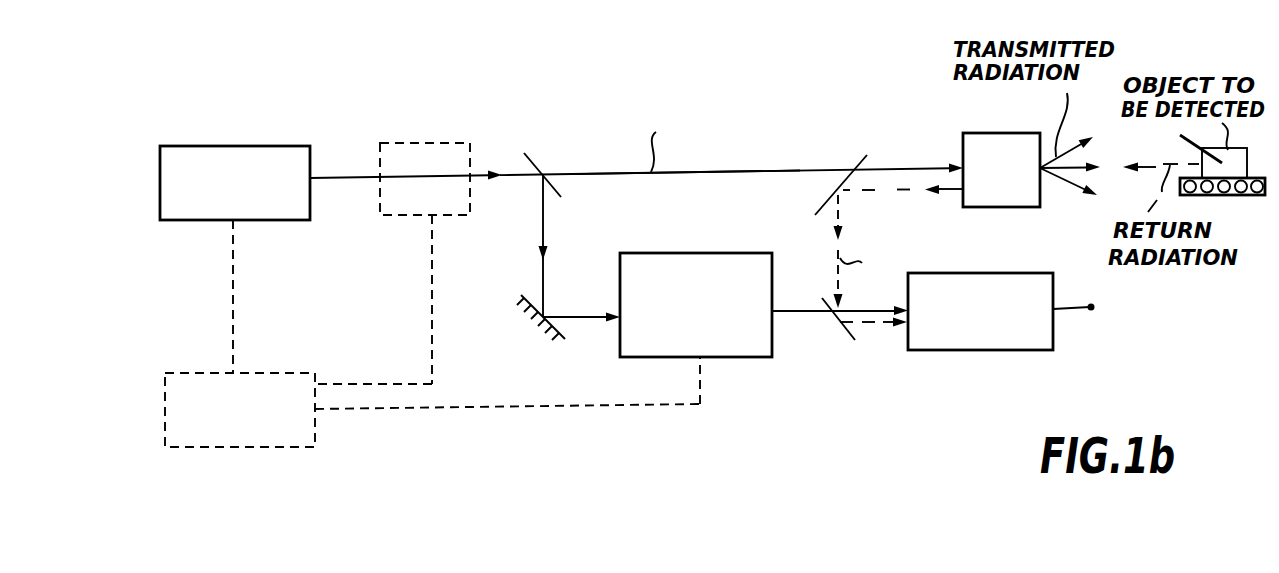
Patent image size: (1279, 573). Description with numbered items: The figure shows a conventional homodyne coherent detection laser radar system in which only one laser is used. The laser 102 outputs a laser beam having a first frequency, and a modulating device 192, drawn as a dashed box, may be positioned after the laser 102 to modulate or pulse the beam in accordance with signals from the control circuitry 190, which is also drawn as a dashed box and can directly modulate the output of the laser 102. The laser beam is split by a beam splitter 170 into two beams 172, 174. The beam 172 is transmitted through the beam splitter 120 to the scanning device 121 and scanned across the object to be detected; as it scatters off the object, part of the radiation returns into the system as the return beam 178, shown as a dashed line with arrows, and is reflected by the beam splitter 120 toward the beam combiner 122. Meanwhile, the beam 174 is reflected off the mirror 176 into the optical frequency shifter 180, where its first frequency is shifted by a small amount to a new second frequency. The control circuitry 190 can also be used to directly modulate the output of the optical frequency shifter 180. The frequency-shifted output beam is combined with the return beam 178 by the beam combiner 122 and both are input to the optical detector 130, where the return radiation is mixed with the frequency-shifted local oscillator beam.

The laser 102 is at (265, 147).
The modulating device 192 is at (442, 141).
The control circuitry 190 is at (276, 448).
The beam splitter 170 is at (530, 156).
The beam 174 is at (546, 213).
The beam 172 is at (688, 172).
The mirror 176 is at (540, 330).
The optical frequency shifter 180 is at (738, 350).
The beam splitter 120 is at (860, 162).
The scanning device 121 is at (1031, 170).
The return beam 178 is at (843, 195).
The beam combiner 122 is at (848, 330).
The optical detector 130 is at (1020, 350).